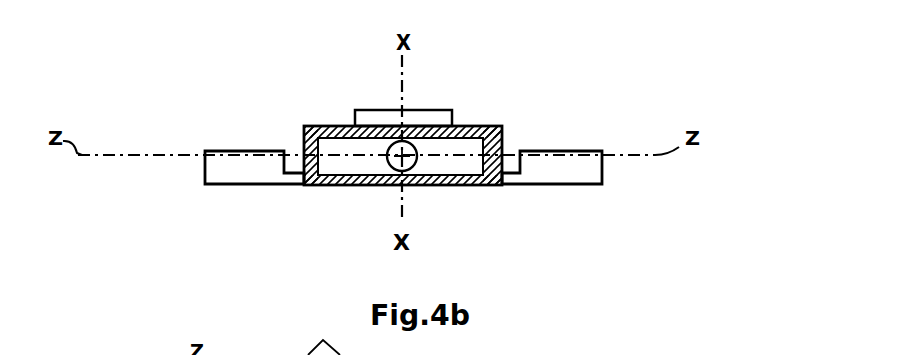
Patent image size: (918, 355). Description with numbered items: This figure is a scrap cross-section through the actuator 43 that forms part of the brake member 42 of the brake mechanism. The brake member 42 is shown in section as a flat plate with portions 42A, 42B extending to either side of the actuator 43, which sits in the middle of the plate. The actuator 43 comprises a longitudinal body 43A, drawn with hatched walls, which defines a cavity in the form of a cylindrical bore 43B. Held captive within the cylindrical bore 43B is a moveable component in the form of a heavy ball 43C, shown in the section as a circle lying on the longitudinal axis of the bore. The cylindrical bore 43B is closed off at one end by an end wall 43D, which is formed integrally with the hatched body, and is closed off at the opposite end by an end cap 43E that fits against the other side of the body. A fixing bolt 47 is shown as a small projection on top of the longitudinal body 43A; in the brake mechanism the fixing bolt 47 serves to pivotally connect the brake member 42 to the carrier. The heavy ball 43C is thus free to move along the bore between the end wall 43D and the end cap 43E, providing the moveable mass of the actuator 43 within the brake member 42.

The brake member 42 is at (367, 124).
The first plate portion 42A is at (557, 150).
The second plate portion 42B is at (230, 150).
The actuator 43 is at (427, 143).
The longitudinal body 43A is at (327, 125).
The cylindrical bore 43B is at (425, 183).
The heavy ball 43C is at (414, 170).
The end wall 43D is at (318, 163).
The end cap 43E is at (504, 147).
The fixing bolt 47 is at (452, 110).